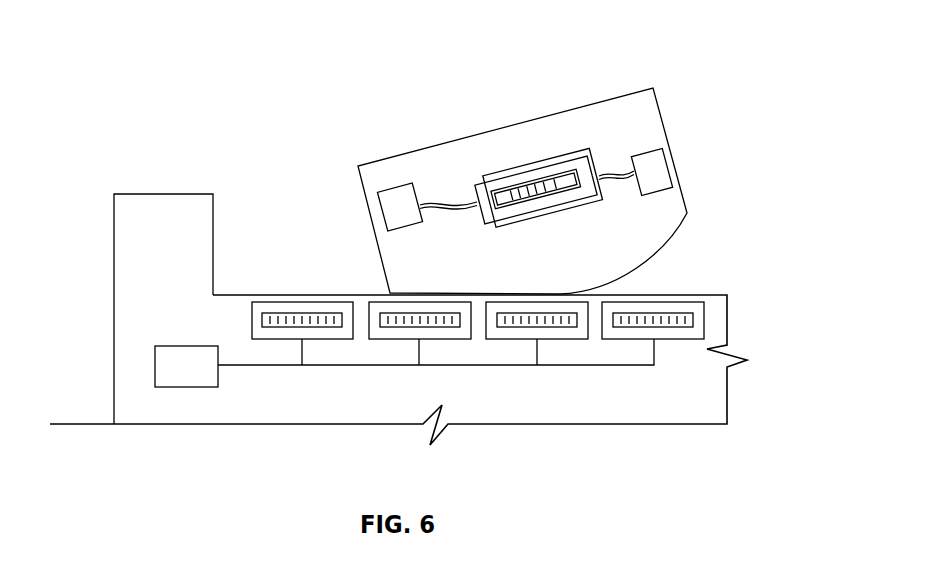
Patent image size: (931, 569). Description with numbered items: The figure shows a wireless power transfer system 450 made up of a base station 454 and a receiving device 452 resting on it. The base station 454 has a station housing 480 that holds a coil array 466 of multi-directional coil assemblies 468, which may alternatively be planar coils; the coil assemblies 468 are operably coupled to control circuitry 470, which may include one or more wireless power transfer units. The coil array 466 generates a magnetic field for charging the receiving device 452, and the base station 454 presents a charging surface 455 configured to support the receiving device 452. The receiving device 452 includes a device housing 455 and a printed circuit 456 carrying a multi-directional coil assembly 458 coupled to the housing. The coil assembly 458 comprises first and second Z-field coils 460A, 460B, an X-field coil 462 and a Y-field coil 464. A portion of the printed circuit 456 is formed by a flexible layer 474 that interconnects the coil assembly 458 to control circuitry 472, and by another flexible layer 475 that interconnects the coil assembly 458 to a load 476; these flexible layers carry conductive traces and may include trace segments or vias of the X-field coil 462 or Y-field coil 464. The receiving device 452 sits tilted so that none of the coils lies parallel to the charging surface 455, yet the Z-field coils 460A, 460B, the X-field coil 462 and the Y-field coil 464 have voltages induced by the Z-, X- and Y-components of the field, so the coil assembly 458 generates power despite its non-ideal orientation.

The WPT system 450 is at (183, 70).
The receiving device 452 is at (718, 127).
The base station 454 is at (150, 173).
The charging surface 455 is at (303, 288).
The printed circuit 456 is at (590, 149).
The multi-directional coil assembly 458 is at (555, 143).
The first Z-field coil 460A is at (503, 168).
The second Z-field coil 460B is at (567, 212).
The X-field coil 462 is at (574, 177).
The Y-field coil 464 is at (517, 216).
The coil array 466 is at (668, 356).
The multi-directional coil assembly 468 is at (252, 322).
The control circuitry 470 is at (188, 388).
The control circuitry 472 is at (375, 191).
The flexible layer 474 is at (460, 212).
The flexible layer 475 is at (623, 183).
The load 476 is at (660, 192).
The station housing 480 is at (114, 265).